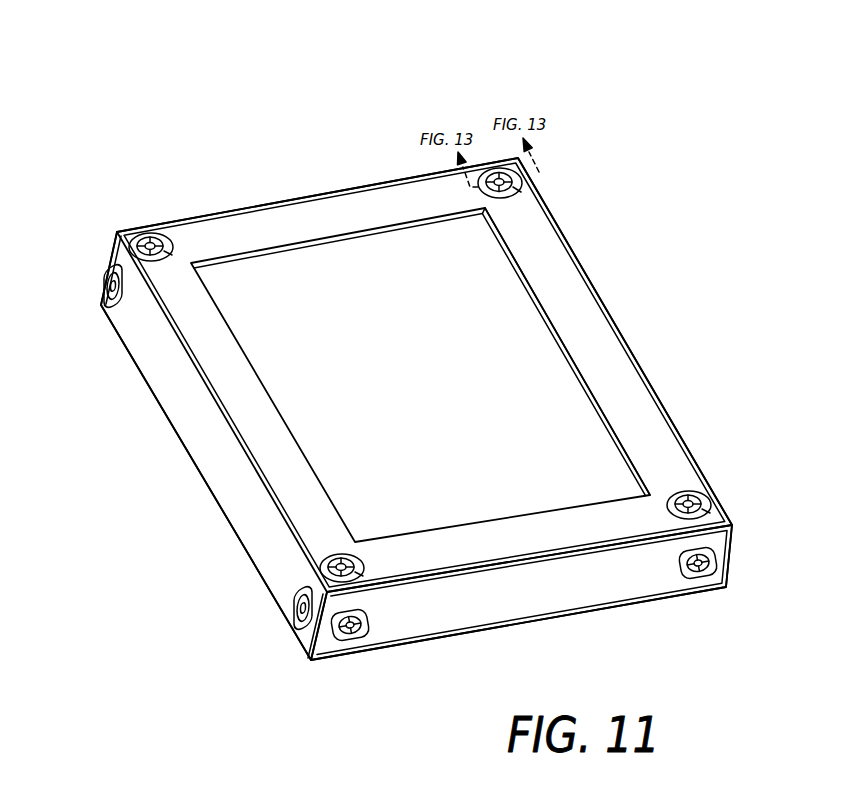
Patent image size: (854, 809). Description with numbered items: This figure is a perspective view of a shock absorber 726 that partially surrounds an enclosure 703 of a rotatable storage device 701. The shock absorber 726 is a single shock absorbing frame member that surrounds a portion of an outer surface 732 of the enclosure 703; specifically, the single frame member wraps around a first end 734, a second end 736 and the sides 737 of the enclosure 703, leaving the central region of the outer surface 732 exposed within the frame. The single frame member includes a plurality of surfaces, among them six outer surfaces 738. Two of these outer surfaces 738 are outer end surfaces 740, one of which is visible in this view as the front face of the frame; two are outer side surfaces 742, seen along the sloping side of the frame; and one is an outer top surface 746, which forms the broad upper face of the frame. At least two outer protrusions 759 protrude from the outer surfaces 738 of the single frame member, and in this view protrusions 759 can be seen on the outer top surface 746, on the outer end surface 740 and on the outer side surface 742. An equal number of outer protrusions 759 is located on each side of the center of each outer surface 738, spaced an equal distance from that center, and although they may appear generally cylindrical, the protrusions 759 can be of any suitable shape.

The shock absorber 726 is at (316, 128).
The first end 734 is at (308, 190).
The outer surfaces 738 is at (403, 202).
The outer protrusions 759 is at (500, 180).
The outer top surface 746 is at (190, 228).
The rotatable storage device 701 is at (560, 320).
The sides 737 is at (226, 532).
The outer surface 732 is at (550, 402).
The enclosure 703 is at (283, 420).
The outer side surfaces 742 is at (162, 370).
The outer end surfaces 740 is at (555, 598).
The second end 736 is at (680, 621).